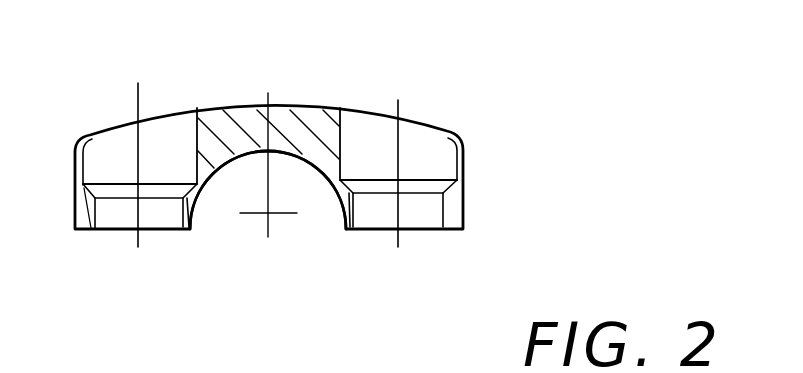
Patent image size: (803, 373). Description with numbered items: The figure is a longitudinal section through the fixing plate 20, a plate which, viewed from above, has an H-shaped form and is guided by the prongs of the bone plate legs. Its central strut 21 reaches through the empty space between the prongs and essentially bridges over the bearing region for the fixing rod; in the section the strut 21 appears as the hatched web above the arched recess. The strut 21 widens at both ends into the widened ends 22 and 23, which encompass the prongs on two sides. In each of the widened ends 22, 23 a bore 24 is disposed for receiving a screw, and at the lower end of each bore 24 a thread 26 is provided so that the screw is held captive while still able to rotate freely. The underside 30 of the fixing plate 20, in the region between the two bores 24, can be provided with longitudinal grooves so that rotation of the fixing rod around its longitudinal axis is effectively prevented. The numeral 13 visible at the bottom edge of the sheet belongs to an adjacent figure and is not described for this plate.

The fixing plate 20 is at (472, 140).
The strut 21 is at (290, 128).
The widened end 22 is at (74, 200).
The widened end 23 is at (440, 214).
The bore 24 is at (165, 147).
The thread 26 is at (99, 207).
The underside 30 is at (300, 157).
The adjacent figure numeral 13 is at (338, 361).